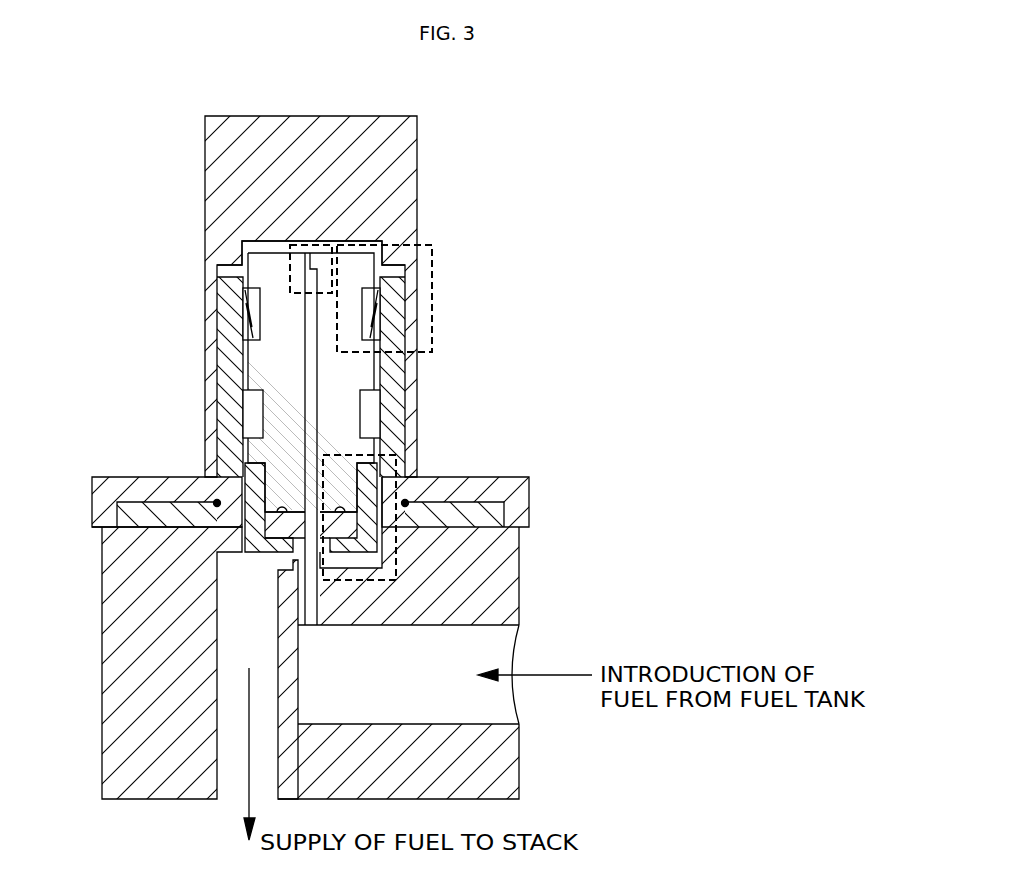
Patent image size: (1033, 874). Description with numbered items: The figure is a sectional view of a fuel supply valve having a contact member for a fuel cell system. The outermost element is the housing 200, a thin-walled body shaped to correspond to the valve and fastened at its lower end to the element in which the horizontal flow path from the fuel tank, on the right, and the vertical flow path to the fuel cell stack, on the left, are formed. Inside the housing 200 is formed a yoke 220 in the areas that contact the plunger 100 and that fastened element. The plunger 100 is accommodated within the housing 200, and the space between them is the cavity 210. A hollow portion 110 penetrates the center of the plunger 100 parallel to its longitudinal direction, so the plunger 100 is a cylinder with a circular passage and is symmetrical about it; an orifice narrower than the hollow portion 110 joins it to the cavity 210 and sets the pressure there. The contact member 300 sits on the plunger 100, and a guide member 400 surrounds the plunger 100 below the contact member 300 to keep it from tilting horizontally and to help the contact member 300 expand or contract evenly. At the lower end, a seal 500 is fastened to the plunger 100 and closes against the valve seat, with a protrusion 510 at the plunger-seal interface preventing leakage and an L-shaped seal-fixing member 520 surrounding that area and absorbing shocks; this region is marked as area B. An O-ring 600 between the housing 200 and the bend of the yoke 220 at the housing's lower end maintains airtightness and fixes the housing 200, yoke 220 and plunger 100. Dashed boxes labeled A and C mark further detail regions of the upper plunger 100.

The plunger 100 is at (360, 290).
The hollow portion 110 is at (312, 287).
The housing 200 is at (217, 137).
The cavity 210 is at (270, 247).
The yoke 220 is at (493, 513).
The contact member 300 is at (255, 318).
The guide member 400 is at (373, 405).
The seal 500 is at (278, 532).
The protrusion 510 is at (207, 477).
The seal-fixing member 520 is at (248, 535).
The O-ring 600 is at (405, 503).
The region A is at (432, 299).
The area B is at (396, 467).
The region C is at (291, 267).